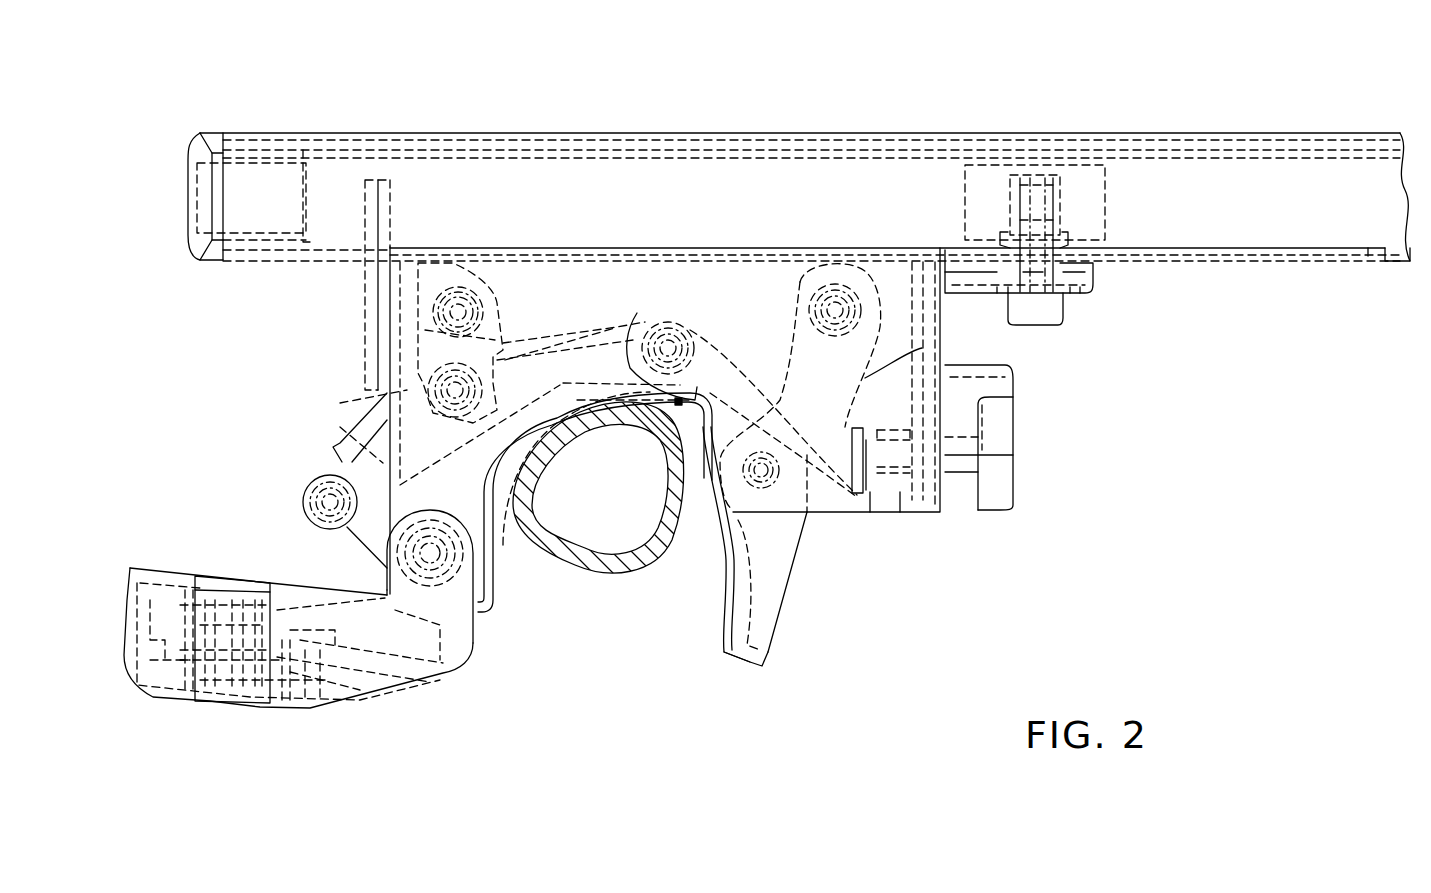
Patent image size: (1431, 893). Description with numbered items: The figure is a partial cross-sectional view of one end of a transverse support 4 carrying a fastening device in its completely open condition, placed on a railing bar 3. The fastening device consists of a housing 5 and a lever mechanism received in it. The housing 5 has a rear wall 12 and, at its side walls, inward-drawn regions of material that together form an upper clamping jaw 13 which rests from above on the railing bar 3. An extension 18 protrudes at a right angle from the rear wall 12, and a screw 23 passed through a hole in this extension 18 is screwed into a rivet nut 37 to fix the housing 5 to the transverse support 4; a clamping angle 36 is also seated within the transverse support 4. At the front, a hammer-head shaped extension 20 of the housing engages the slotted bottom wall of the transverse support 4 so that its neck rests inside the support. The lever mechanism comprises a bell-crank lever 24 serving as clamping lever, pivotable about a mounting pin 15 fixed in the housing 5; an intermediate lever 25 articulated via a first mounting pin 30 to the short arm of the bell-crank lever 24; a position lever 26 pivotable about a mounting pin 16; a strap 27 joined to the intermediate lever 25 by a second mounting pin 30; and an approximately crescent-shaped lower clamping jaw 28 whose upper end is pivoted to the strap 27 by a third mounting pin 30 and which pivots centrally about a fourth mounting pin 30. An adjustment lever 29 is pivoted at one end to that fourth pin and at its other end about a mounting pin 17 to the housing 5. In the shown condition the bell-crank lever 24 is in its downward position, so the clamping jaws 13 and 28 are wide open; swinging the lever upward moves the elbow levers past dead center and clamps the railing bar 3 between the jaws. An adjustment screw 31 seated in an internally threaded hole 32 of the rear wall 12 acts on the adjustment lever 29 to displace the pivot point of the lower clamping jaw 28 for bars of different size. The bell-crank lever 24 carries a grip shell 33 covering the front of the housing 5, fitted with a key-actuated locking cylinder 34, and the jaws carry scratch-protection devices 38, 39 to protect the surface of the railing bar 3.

The railing bar 3 is at (622, 570).
The transverse support 4 is at (1218, 133).
The housing 5 is at (710, 275).
The rear wall 12 is at (950, 353).
The clamping jaw 13 is at (548, 448).
The mounting pin 15 is at (432, 565).
The mounting pin 16 is at (445, 320).
The mounting pin 17 is at (835, 308).
The extension 18 is at (973, 275).
The hammer-head shaped extension 20 is at (388, 199).
The screw 23 is at (1055, 310).
The bell-crank lever 24 is at (412, 645).
The intermediate lever 25 is at (368, 447).
The position lever 26 is at (425, 358).
The strap 27 is at (563, 370).
The lower clamping jaw 28 is at (777, 590).
The adjustment lever 29 is at (870, 378).
The mounting pin 30 is at (678, 348).
The adjustment screw 31 is at (1000, 495).
The internally threaded hole 32 is at (897, 470).
The grip shell 33 is at (145, 690).
The locking cylinder 34 is at (232, 635).
The clamping angle 36 is at (988, 190).
The rivet nut 37 is at (1055, 185).
The scratch-protection device 38 is at (645, 378).
The scratch-protection device 39 is at (748, 665).